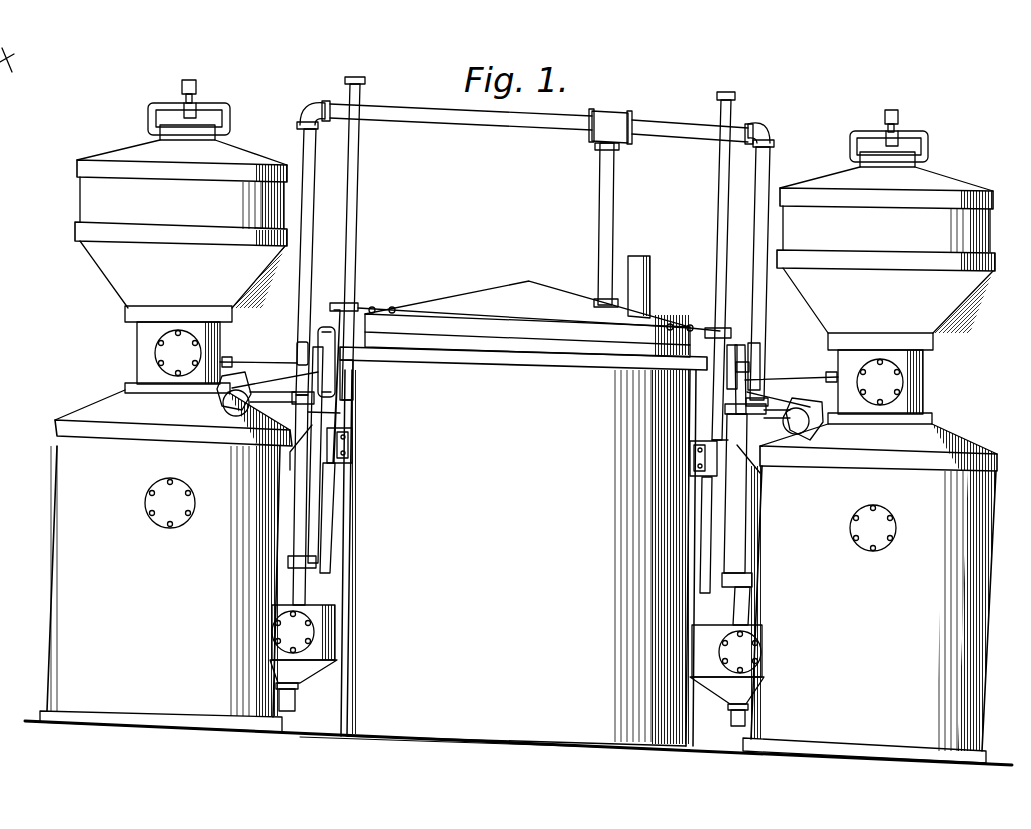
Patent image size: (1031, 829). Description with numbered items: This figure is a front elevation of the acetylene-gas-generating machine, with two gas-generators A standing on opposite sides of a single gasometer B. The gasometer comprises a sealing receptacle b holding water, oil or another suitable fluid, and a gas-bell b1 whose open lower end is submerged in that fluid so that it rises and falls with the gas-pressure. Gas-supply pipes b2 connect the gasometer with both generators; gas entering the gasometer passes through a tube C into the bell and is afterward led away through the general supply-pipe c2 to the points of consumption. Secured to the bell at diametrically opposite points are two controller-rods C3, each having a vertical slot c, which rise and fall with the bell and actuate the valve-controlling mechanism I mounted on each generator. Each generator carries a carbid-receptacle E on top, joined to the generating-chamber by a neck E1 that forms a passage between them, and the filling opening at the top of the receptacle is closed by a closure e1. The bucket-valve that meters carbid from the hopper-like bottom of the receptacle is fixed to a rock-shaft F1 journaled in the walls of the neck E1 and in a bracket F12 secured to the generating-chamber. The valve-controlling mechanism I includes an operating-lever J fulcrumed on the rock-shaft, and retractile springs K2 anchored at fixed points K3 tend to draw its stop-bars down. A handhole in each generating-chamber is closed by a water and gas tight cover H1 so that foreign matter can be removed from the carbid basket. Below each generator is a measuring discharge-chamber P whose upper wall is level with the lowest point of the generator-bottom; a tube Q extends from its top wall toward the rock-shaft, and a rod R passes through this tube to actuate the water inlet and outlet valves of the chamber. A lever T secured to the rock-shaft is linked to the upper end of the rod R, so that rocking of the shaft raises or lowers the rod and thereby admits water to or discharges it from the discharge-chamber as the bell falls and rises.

The gas-generator A is at (518, 576).
The gasometer B is at (523, 546).
The fluid or sealing receptacle b is at (527, 353).
The gas-bell b1 is at (580, 302).
The gas-supply pipes b2 is at (262, 396).
The vertical slot c is at (712, 423).
The general supply-pipe c2 is at (551, 317).
The tube C is at (354, 393).
The controller-rods C3 is at (350, 311).
The carbid-receptacle E is at (535, 229).
The closure e1 is at (207, 124).
The neck E1 is at (137, 357).
The rock-shaft F1 is at (265, 360).
The bracket F12 is at (341, 414).
The handhole cover H1 is at (145, 507).
The valve-controlling mechanism I is at (545, 353).
The operating-lever J is at (354, 401).
The retractile spring K2 is at (313, 509).
The fixed point K3 is at (316, 565).
The measuring discharge-chamber P is at (517, 693).
The tube Q is at (768, 514).
The rod R is at (296, 372).
The lever T is at (298, 342).